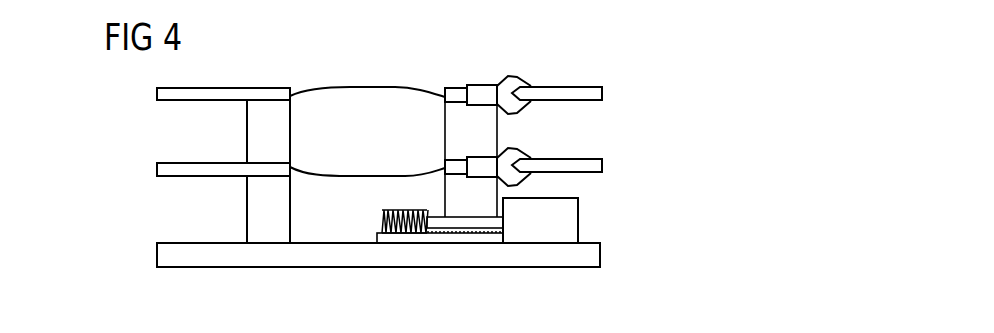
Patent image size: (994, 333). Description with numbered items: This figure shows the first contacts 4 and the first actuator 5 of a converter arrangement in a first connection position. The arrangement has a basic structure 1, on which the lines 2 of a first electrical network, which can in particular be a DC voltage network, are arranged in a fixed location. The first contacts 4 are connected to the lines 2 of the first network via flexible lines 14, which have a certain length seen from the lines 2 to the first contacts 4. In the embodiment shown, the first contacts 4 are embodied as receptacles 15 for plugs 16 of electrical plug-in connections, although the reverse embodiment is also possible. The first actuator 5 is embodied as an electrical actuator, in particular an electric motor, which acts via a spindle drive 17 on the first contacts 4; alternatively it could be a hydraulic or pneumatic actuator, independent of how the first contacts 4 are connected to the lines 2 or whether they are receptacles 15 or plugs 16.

The basic structure 1 is at (157, 256).
The lines 2 is at (157, 167).
The first contacts 4 is at (546, 77).
The first actuator 5 is at (578, 212).
The flexible lines 14 is at (367, 86).
The receptacles 15 is at (588, 41).
The plugs 16 is at (602, 94).
The spindle drive 17 is at (393, 237).